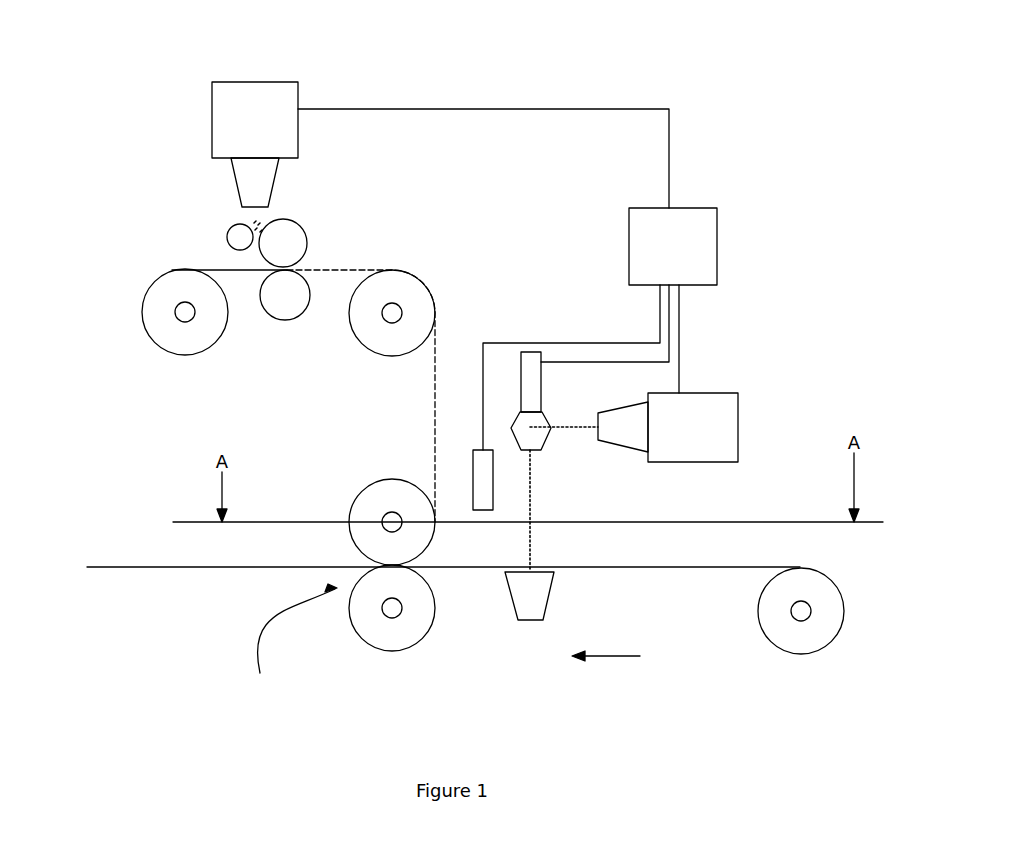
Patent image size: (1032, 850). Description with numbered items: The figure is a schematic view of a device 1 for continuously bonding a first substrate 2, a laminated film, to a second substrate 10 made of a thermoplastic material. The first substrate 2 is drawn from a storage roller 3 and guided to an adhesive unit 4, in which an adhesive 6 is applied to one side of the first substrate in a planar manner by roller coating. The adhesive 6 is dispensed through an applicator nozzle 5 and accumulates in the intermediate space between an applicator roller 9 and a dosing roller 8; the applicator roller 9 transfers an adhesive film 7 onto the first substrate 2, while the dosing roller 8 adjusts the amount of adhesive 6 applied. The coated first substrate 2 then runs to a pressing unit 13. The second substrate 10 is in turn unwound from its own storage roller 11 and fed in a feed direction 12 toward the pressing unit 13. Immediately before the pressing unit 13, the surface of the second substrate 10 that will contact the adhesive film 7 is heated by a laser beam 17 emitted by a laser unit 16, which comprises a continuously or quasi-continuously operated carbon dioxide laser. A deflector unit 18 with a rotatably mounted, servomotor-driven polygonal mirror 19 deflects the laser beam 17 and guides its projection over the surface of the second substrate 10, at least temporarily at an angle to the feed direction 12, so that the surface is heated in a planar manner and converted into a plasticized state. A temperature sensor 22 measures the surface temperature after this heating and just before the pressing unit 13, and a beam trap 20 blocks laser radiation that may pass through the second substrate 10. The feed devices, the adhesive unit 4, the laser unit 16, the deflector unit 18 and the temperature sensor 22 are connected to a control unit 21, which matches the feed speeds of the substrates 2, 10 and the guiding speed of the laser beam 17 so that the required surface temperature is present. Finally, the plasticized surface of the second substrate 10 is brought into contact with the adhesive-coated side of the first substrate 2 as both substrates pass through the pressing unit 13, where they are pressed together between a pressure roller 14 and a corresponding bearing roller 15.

The device 1 is at (700, 88).
The first substrate 2 is at (220, 268).
The storage roller 3 is at (172, 285).
The adhesive unit 4 is at (231, 120).
The applicator nozzle 5 is at (260, 185).
The adhesive 6 is at (242, 238).
The adhesive film 7 is at (347, 270).
The dosing roller 8 is at (228, 262).
The applicator roller 9 is at (283, 243).
The second substrate 10 is at (688, 568).
The storage roller 11 is at (797, 637).
The feed direction 12 is at (612, 656).
The pressing unit 13 is at (291, 639).
The pressure roller 14 is at (378, 527).
The bearing roller 15 is at (377, 637).
The laser unit 16 is at (727, 412).
The laser beam 17 is at (570, 424).
The deflector unit 18 is at (532, 350).
The polygonal mirror 19 is at (522, 420).
The beam trap 20 is at (522, 607).
The control unit 21 is at (669, 257).
The temperature sensor 22 is at (484, 480).